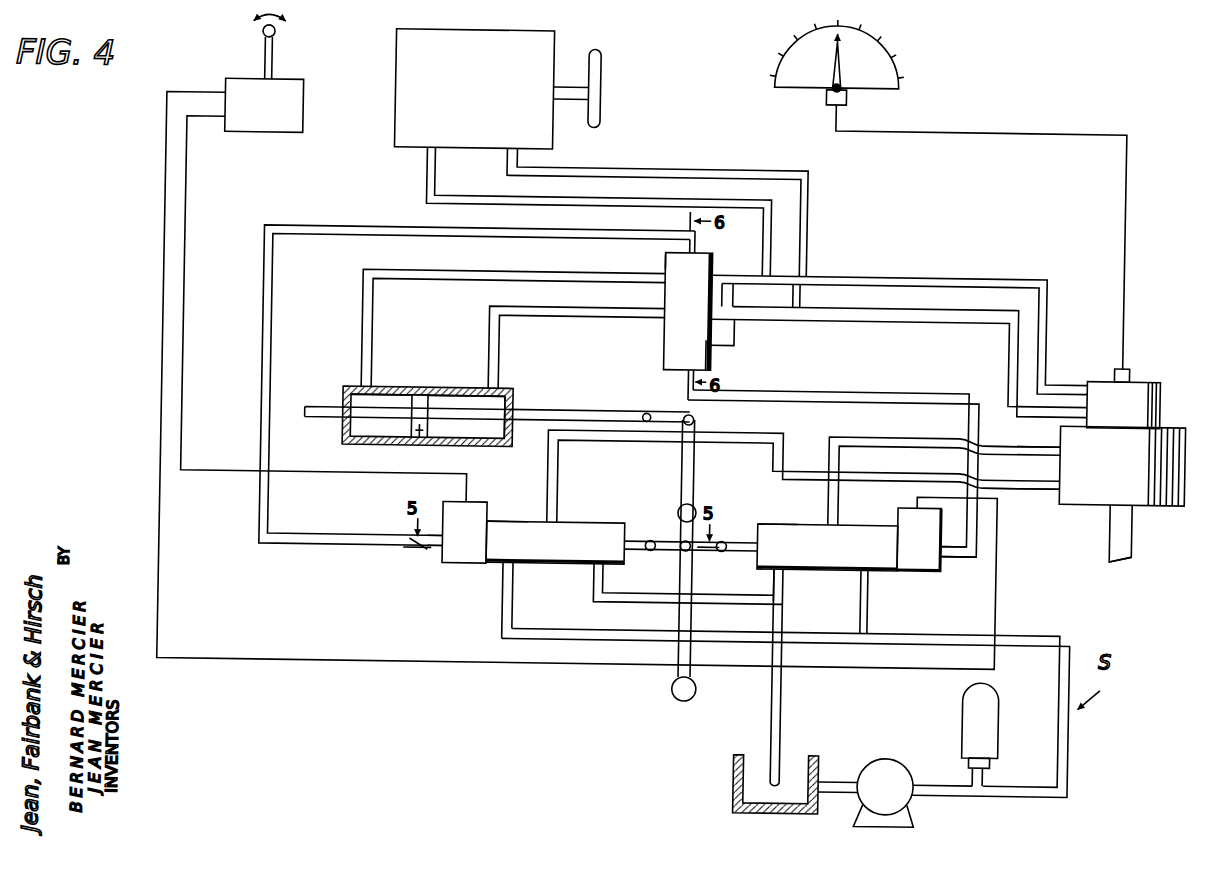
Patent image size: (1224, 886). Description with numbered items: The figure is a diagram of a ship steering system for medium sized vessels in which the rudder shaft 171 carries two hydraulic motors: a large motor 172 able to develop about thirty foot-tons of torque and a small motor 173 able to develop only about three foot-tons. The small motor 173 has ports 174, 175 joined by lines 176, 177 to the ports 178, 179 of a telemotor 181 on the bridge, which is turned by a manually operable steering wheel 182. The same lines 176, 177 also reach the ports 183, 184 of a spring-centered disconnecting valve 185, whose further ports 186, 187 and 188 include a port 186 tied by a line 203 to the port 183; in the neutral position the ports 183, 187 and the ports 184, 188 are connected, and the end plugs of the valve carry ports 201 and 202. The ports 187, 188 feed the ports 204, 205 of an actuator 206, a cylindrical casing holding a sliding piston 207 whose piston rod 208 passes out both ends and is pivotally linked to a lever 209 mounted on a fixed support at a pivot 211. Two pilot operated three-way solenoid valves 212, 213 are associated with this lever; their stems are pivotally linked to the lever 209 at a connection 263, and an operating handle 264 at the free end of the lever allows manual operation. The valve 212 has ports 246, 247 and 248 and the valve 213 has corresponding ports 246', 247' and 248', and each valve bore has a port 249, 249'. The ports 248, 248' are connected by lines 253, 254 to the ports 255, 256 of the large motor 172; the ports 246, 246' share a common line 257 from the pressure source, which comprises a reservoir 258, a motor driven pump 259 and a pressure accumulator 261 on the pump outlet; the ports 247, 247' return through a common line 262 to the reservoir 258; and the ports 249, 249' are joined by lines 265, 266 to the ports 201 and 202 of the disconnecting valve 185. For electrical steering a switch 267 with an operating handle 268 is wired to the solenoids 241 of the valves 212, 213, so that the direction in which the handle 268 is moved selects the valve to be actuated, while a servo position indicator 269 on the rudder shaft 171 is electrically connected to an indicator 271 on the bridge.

The rudder shaft 171 is at (1132, 556).
The hydraulic motor 172 is at (1112, 505).
The hydraulic motor 173 is at (1161, 409).
The port 174 is at (1089, 387).
The port 175 is at (1090, 415).
The line 176 is at (967, 276).
The line 177 is at (939, 307).
The port 178 is at (432, 150).
The port 179 is at (513, 150).
The telemotor 181 is at (388, 44).
The steering wheel 182 is at (593, 78).
The port 183 is at (711, 263).
The port 184 is at (706, 317).
The disconnecting valve 185 is at (659, 263).
The port 186 is at (716, 346).
The port 187 is at (662, 285).
The port 188 is at (662, 320).
The port 201 is at (695, 242).
The port 202 is at (686, 377).
The line 203 is at (735, 340).
The port 204 is at (349, 390).
The port 205 is at (488, 390).
The actuator 206 is at (521, 396).
The piston 207 is at (422, 441).
The piston rod 208 is at (524, 424).
The lever 209 is at (698, 457).
The pivot 211 is at (698, 510).
The solenoid valve 212 is at (527, 519).
The solenoid valve 213 is at (808, 521).
The solenoid 241 is at (459, 567).
The port 246 is at (488, 600).
The port 246' is at (887, 600).
The port 247 is at (667, 585).
The port 247' is at (783, 589).
The port 248 is at (558, 526).
The port 248' is at (827, 547).
The port 249 is at (416, 558).
The port 249' is at (964, 569).
The line 253 is at (928, 470).
The line 254 is at (836, 440).
The port 255 is at (1052, 484).
The port 256 is at (1058, 443).
The common line 257 is at (742, 644).
The reservoir 258 is at (798, 766).
The pump 259 is at (904, 800).
The pressure accumulator 261 is at (998, 703).
The common line 262 is at (788, 713).
The pivotal connection 263 is at (692, 551).
The operating handle 264 is at (680, 700).
The line 265 is at (260, 348).
The line 266 is at (891, 390).
The switch 267 is at (266, 140).
The operating handle 268 is at (274, 72).
The servo position indicator 269 is at (1132, 368).
The indicator 271 is at (862, 62).